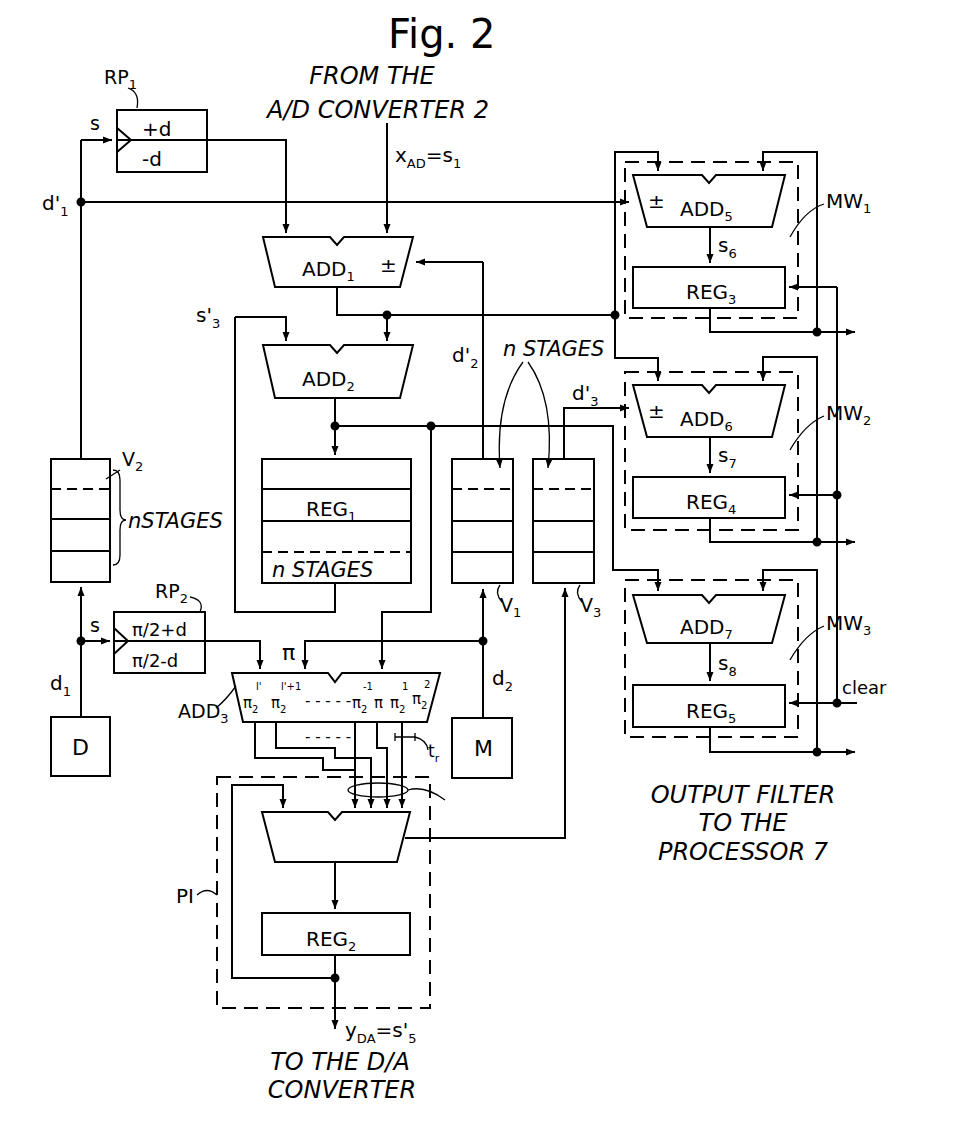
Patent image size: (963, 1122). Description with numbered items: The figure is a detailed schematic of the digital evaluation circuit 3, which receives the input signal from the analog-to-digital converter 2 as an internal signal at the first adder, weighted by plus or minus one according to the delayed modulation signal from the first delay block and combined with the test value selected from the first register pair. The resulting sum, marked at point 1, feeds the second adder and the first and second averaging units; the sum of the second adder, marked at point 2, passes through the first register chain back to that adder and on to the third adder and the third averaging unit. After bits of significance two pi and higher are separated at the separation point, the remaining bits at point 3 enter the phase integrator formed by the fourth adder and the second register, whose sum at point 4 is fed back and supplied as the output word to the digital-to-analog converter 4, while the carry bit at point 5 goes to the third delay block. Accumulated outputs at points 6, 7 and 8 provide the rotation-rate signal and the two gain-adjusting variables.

The subassembly of the external signal path 1 is at (476, 314).
The analog-to-digital converter 2 is at (496, 546).
The digital evaluation circuit 3 is at (576, 108).
The digital-to-analog converter 4 is at (366, 885).
The subassembly of the external signal path 5 is at (485, 713).
The output of third averaging unit 6 is at (779, 669).
The output of first averaging unit 7 is at (782, 250).
The output of second averaging unit 8 is at (782, 458).